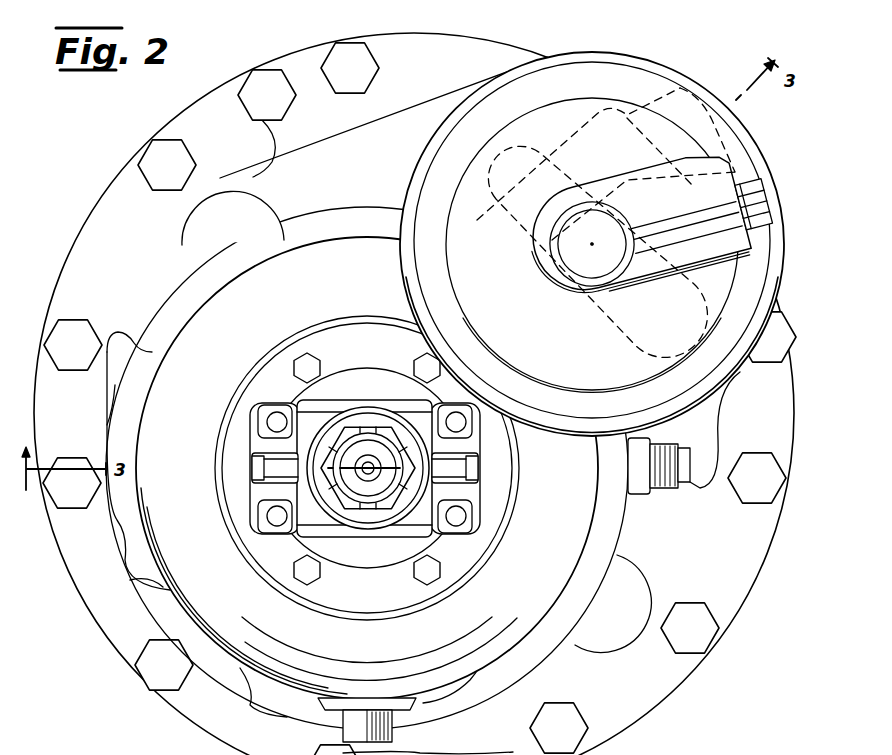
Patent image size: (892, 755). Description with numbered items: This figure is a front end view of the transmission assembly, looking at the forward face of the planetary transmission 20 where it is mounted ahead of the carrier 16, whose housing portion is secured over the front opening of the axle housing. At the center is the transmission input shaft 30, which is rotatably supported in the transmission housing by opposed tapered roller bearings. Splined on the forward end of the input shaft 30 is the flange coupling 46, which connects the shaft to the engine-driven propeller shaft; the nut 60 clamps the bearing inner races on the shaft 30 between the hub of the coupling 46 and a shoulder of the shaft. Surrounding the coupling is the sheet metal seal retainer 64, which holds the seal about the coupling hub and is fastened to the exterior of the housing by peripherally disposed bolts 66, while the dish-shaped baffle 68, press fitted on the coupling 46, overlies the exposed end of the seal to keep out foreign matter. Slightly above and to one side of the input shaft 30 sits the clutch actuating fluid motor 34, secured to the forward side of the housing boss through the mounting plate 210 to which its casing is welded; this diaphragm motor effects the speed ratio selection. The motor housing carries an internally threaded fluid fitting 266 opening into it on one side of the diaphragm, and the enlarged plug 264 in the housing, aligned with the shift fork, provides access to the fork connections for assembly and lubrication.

The carrier 16 is at (94, 209).
The planetary transmission 20 is at (187, 306).
The transmission input shaft 30 is at (393, 442).
The clutch actuating fluid motor 34 is at (602, 227).
The flange coupling 46 is at (257, 428).
The nut 60 is at (352, 445).
The seal retainer 64 is at (495, 530).
The bolts 66 is at (300, 358).
The dish-shaped baffle 68 is at (396, 553).
The mounting plate 210 is at (500, 232).
The plug 264 is at (692, 80).
The fluid fitting 266 is at (754, 204).